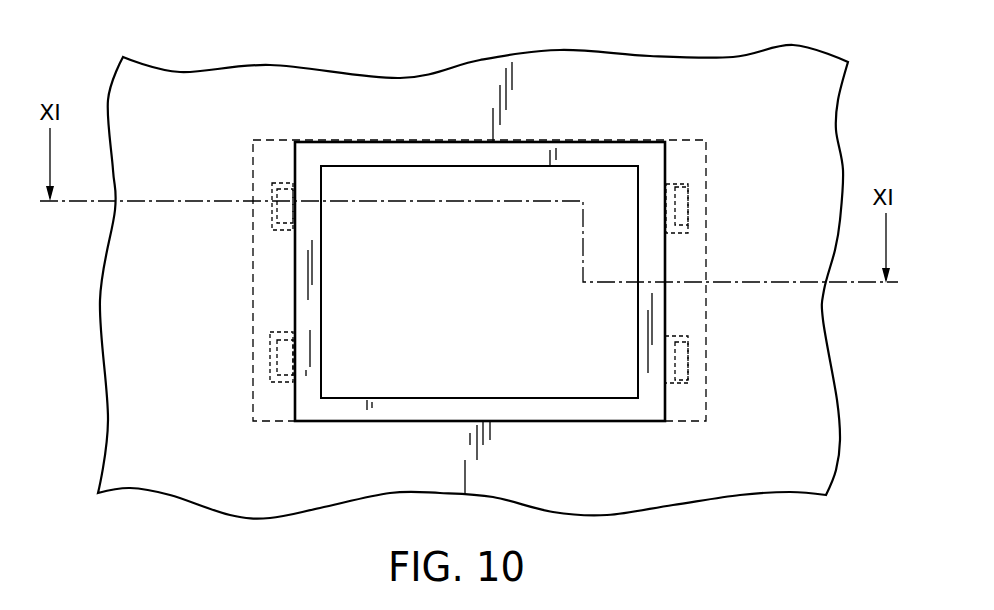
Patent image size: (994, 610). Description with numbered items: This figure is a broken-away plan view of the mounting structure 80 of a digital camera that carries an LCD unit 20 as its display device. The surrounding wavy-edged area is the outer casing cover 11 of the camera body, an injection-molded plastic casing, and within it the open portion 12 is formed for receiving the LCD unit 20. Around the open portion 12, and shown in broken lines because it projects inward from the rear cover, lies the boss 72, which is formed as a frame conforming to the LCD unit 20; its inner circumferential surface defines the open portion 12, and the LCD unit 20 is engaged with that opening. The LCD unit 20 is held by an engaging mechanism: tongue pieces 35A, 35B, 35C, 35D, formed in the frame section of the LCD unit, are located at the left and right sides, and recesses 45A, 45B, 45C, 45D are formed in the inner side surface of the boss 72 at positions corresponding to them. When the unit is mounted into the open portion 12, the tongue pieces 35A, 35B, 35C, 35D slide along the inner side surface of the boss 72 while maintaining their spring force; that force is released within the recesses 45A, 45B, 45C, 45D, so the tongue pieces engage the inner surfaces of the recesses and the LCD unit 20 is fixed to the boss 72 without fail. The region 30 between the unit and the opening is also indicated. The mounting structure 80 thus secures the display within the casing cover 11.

The outer casing cover 11 is at (822, 433).
The open portion 12 is at (625, 423).
The LCD unit 20 is at (409, 398).
The peripheral region 30 is at (532, 422).
The tongue piece 35A is at (285, 192).
The tongue piece 35B is at (683, 190).
The tongue piece 35C is at (288, 378).
The tongue piece 35D is at (676, 384).
The recess 45A is at (277, 216).
The recess 45B is at (690, 226).
The recess 45C is at (272, 345).
The recess 45D is at (684, 356).
The boss 72 is at (683, 148).
The mounting structure 80 is at (594, 137).